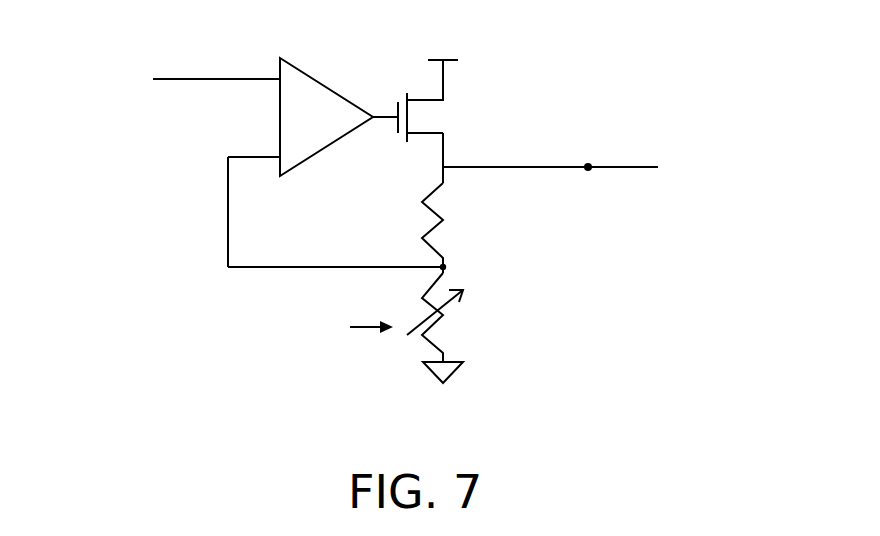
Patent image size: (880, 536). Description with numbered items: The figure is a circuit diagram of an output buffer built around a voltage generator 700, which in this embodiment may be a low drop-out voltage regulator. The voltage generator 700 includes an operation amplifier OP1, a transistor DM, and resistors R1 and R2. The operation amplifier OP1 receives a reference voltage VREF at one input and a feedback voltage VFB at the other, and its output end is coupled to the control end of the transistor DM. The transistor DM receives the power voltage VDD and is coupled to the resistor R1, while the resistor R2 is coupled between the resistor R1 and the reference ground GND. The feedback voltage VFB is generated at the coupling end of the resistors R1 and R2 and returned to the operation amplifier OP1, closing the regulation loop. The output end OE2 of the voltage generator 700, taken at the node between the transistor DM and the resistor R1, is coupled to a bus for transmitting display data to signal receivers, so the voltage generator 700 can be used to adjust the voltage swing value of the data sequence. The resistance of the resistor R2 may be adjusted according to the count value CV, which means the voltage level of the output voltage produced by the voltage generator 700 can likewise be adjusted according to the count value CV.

The voltage generator 700 is at (680, 408).
The operation amplifier OP1 is at (323, 84).
The transistor DM is at (447, 113).
The resistor R1 is at (449, 228).
The resistor R2 is at (444, 317).
The output end OE2 is at (588, 167).
The reference voltage VREF is at (225, 64).
The feedback voltage VFB is at (233, 139).
The power voltage VDD is at (445, 45).
The reference ground GND is at (445, 390).
The count value CV is at (356, 329).